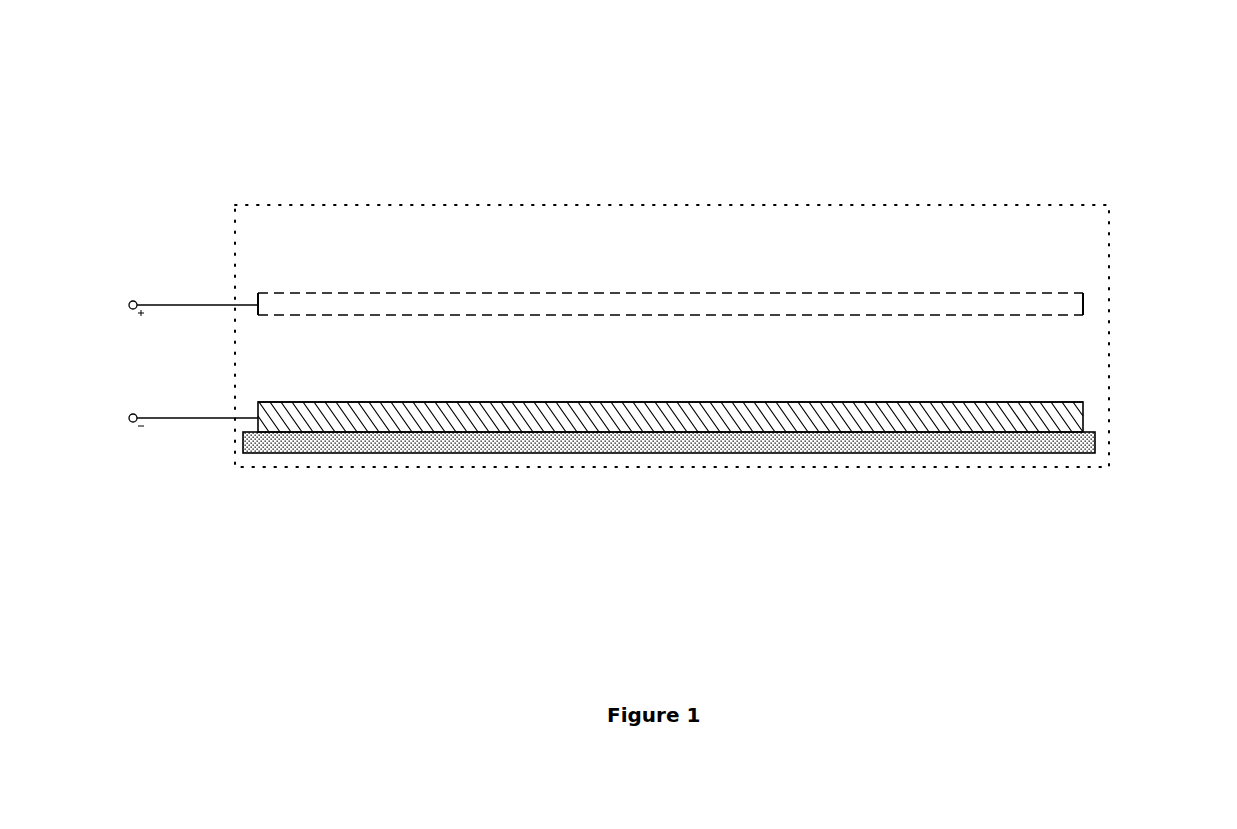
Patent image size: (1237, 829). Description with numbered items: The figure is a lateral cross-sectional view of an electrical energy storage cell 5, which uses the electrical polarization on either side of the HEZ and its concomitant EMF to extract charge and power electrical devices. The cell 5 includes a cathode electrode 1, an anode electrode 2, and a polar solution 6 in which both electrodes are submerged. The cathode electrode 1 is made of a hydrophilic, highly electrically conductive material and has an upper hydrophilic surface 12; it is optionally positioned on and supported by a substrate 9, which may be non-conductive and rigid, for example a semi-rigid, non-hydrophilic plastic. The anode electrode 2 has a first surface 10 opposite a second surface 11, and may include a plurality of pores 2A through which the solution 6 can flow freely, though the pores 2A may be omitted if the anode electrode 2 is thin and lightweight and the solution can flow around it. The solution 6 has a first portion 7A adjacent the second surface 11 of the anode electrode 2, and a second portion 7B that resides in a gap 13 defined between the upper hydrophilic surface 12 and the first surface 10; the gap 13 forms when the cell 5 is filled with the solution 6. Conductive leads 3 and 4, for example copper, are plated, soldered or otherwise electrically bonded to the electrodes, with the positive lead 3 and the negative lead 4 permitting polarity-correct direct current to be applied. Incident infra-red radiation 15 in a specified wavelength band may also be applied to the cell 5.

The cathode electrode 1 is at (1083, 416).
The anode electrode 2 is at (1083, 302).
The pores 2A is at (538, 293).
The positive lead 3 is at (200, 305).
The negative lead 4 is at (215, 418).
The electrical energy storage cell 5 is at (626, 124).
The polar solution 6 is at (674, 254).
The first portion 7A is at (672, 249).
The second portion 7B is at (318, 372).
The substrate 9 is at (765, 453).
The first surface 10 is at (848, 315).
The second surface 11 is at (952, 293).
The upper hydrophilic surface 12 is at (852, 402).
The gap 13 is at (272, 355).
The infra-red radiation 15 is at (1208, 88).